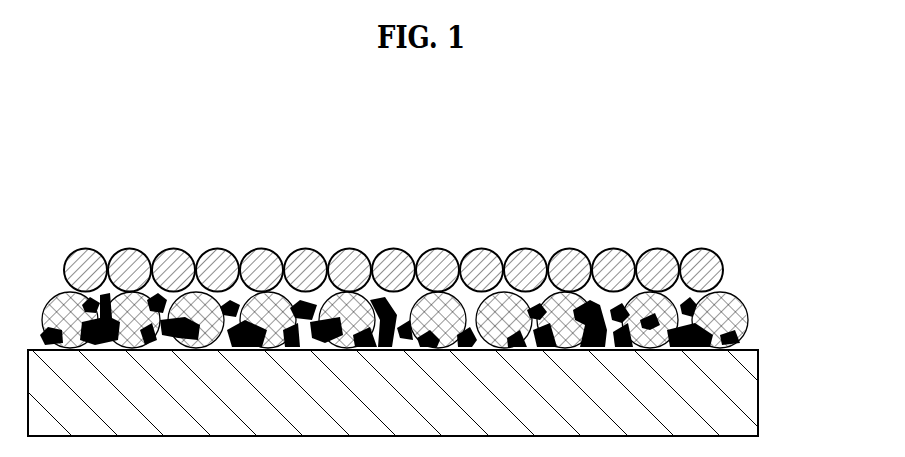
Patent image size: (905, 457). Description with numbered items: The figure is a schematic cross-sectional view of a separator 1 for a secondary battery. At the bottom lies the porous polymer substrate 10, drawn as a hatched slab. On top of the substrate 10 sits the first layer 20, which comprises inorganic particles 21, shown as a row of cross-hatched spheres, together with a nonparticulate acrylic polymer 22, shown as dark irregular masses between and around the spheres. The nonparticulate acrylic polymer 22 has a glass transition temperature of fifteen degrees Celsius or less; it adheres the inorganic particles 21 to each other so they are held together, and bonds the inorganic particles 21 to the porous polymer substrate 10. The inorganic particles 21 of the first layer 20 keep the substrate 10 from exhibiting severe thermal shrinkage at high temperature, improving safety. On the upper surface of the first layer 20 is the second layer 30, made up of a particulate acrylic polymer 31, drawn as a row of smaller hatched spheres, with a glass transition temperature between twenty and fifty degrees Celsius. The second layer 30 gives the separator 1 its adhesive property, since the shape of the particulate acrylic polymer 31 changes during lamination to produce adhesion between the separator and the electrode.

The separator for a secondary battery 1 is at (412, 140).
The porous polymer substrate 10 is at (772, 352).
The first layer 20 is at (428, 275).
The inorganic particles 21 is at (735, 308).
The nonparticulate acrylic polymer 22 is at (601, 308).
The second layer 30 is at (440, 247).
The particulate acrylic polymer 31 is at (657, 253).